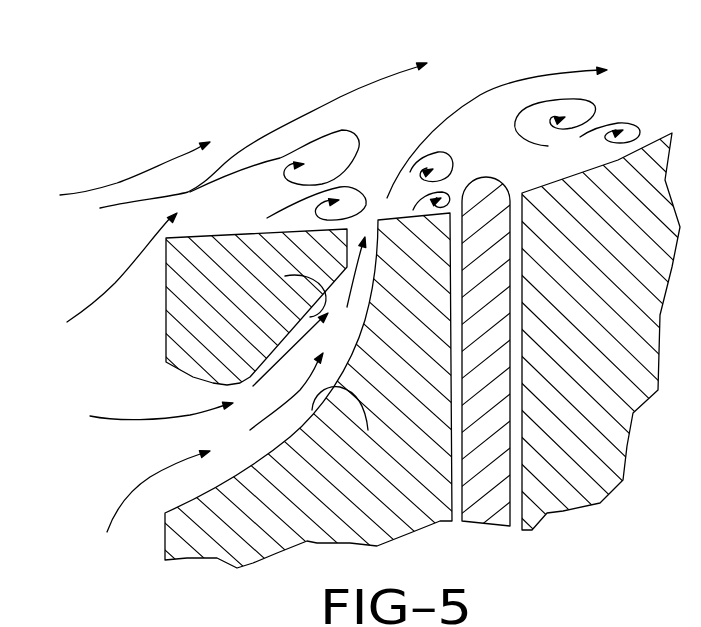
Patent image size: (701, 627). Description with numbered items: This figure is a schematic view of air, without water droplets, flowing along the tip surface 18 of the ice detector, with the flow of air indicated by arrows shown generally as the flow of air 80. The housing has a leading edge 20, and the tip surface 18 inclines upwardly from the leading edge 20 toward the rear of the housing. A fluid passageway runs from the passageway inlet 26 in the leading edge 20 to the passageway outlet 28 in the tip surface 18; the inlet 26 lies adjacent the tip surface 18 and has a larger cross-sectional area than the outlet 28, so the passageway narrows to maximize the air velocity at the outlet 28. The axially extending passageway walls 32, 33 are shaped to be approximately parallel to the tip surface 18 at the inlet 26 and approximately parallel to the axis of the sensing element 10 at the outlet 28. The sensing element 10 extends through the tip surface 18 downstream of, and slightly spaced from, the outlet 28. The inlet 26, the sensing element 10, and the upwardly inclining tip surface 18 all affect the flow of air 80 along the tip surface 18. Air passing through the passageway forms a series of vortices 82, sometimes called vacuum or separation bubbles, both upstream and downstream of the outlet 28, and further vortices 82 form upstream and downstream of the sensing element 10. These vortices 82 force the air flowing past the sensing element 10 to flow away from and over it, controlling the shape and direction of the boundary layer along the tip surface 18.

The sensing element 10 is at (483, 505).
The tip surface 18 is at (251, 236).
The leading edge 20 is at (166, 293).
The passageway inlet 26 is at (145, 455).
The passageway outlet 28 is at (362, 238).
The passageway wall 32 is at (346, 420).
The passageway wall 33 is at (292, 291).
The flow of air 80 is at (340, 97).
The vortices 82 is at (345, 128).